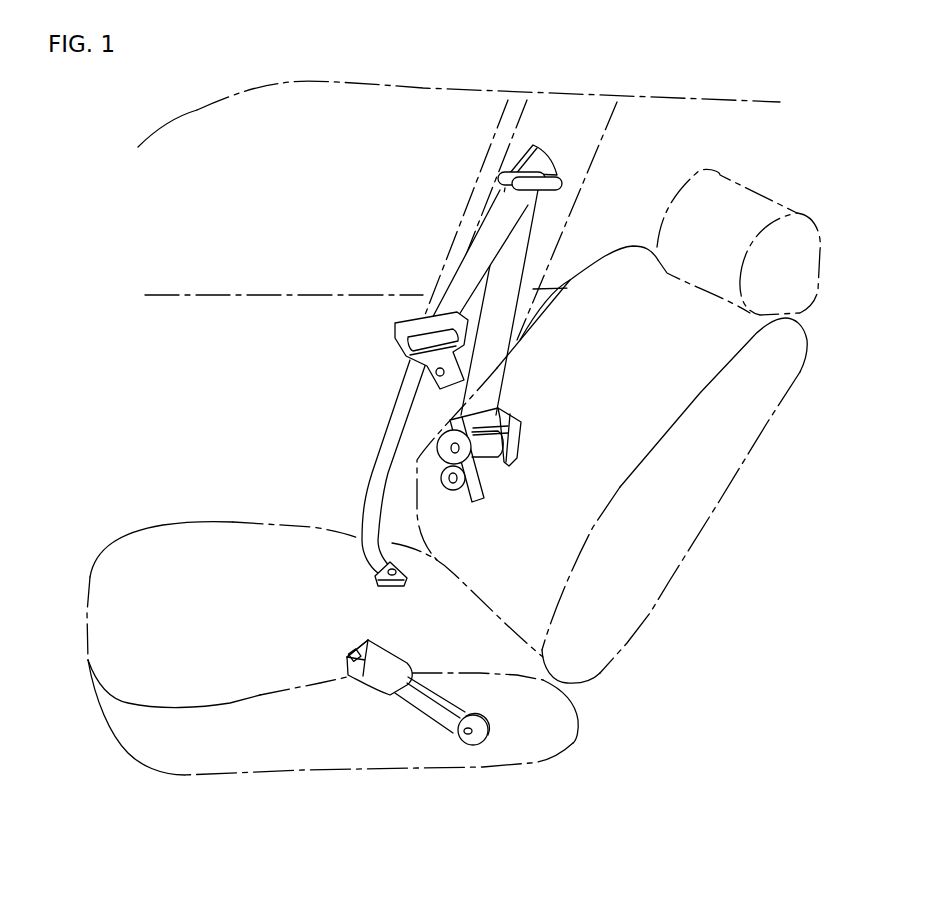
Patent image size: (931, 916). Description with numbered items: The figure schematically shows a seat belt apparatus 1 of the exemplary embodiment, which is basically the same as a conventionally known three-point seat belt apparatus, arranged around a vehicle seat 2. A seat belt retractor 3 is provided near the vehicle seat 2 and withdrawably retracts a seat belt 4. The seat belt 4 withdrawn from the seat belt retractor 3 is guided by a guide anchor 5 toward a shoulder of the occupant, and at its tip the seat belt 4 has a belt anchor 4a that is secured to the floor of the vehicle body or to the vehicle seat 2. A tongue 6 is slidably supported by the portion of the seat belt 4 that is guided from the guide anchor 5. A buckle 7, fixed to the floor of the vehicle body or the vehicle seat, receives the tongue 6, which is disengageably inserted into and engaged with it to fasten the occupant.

The seat belt apparatus 1 is at (545, 542).
The vehicle seat 2 is at (236, 752).
The seat belt retractor 3 is at (512, 445).
The seat belt 4 is at (485, 258).
The belt anchor 4a is at (397, 587).
The guide anchor 5 is at (544, 173).
The tongue 6 is at (400, 340).
The buckle 7 is at (357, 675).